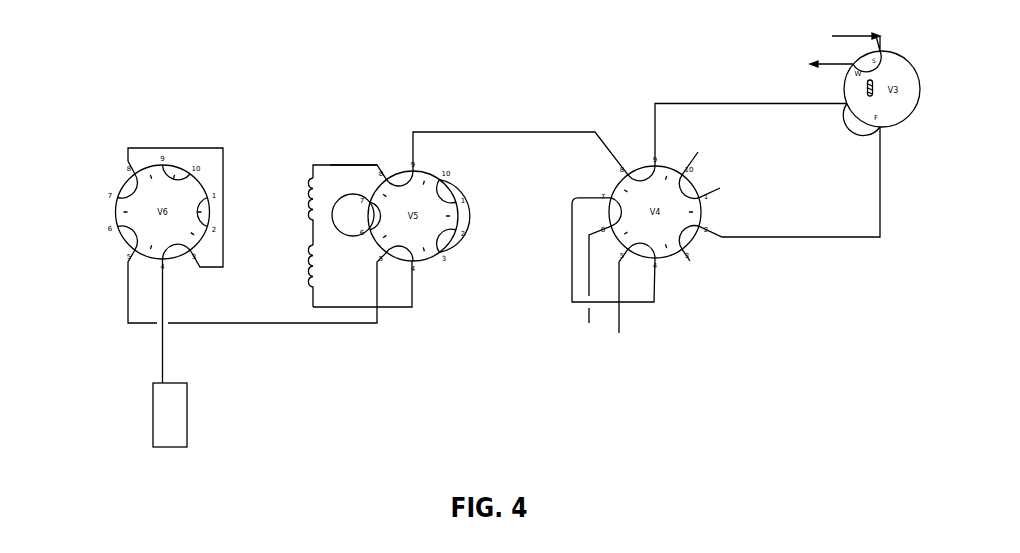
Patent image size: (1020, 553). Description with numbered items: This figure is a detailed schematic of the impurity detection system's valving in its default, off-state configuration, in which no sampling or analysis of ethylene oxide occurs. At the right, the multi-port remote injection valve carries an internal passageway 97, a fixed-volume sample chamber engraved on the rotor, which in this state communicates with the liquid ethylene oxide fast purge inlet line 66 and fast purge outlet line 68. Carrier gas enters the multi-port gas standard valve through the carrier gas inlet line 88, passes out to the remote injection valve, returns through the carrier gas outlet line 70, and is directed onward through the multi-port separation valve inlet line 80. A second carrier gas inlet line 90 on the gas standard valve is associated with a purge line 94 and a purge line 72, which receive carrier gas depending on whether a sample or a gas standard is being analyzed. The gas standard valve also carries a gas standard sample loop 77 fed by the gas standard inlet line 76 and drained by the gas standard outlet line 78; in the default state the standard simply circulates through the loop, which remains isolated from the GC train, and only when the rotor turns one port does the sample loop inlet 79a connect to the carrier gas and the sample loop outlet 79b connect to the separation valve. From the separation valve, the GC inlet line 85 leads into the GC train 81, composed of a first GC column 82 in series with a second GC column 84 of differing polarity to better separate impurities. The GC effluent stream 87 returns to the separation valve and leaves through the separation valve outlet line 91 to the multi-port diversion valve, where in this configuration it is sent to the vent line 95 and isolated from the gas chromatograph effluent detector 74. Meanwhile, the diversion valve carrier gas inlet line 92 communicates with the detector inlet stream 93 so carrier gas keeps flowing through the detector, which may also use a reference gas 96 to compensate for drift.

The liquid ethylene oxide fast purge inlet line 66 is at (833, 38).
The liquid ethylene oxide fast purge outlet line 68 is at (805, 68).
The carrier gas outlet line 70 is at (710, 103).
The purge line 72 is at (823, 248).
The gas chromatograph effluent detector 74 is at (170, 415).
The gas standard inlet line 76 is at (629, 311).
The gas standard sample loop 77 is at (562, 217).
The gas standard outlet line 78 is at (581, 295).
The sample loop inlet 79a is at (657, 261).
The sample loop outlet 79b is at (595, 187).
The multi-port separation valve inlet line 80 is at (500, 128).
The GC train 81 is at (317, 152).
The first GC column 82 is at (279, 211).
The second GC column 84 is at (283, 276).
The GC inlet line 85 is at (348, 160).
The GC effluent stream 87 is at (400, 308).
The carrier gas inlet line 88 is at (708, 274).
The carrier gas inlet line 90 is at (713, 155).
The separation valve outlet line 91 is at (348, 323).
The multi-port diversion valve carrier gas inlet line 92 is at (118, 198).
The gas chromatograph effluent detector inlet stream 93 is at (179, 321).
The purge line 94 is at (734, 184).
The vent line 95 is at (118, 226).
The reference gas 96 is at (177, 383).
The internal passageway 97 is at (872, 82).